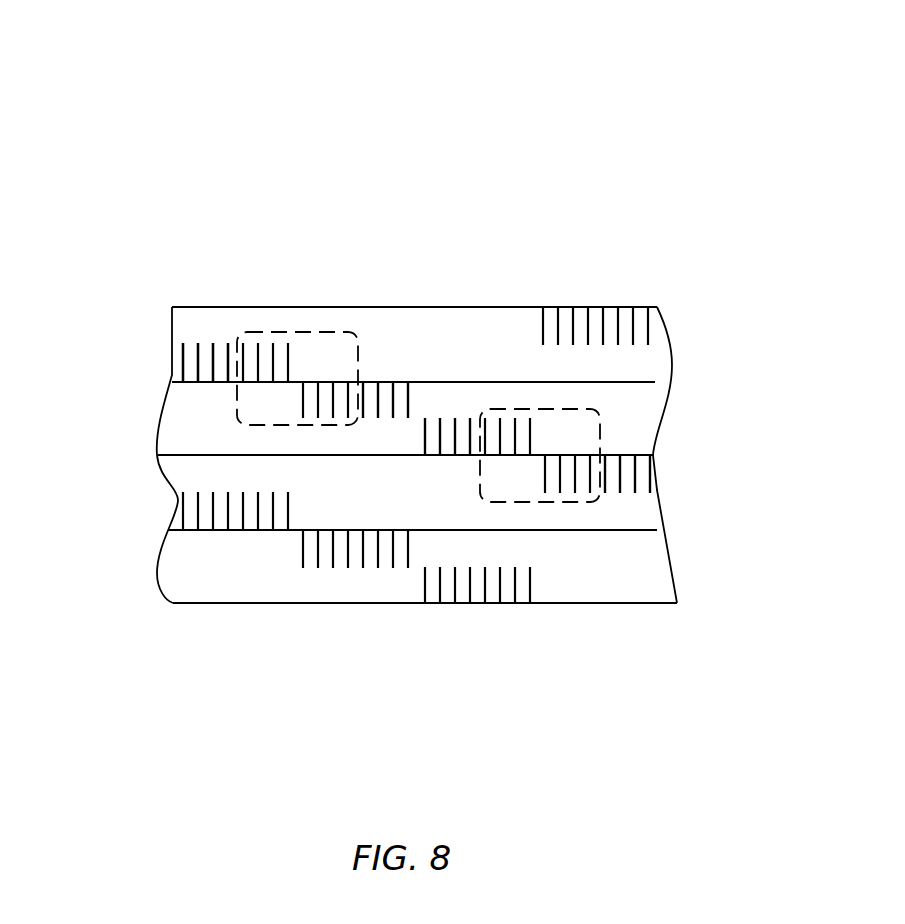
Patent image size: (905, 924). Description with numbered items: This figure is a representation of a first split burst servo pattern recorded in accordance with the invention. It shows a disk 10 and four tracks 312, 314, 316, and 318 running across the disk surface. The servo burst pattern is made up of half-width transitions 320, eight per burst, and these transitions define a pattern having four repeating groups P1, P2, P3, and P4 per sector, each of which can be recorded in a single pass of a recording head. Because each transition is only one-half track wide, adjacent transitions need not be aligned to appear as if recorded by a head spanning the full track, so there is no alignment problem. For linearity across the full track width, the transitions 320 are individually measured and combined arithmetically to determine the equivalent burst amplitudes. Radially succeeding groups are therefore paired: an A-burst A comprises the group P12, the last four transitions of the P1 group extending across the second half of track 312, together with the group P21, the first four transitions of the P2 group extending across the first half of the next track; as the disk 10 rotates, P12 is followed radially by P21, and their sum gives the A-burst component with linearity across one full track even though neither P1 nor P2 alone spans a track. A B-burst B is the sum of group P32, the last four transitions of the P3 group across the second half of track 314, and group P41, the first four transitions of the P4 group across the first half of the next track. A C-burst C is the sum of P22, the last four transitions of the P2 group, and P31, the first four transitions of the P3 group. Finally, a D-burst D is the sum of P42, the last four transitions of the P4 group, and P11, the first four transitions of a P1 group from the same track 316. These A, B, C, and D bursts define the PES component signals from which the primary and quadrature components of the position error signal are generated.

The disk 10 is at (437, 118).
The track 312 is at (717, 343).
The track 314 is at (717, 417).
The track 316 is at (717, 492).
The track 318 is at (717, 573).
The half-width transitions 320 is at (363, 272).
The P1 group P1 is at (170, 488).
The P2 group P2 is at (293, 547).
The P3 group P3 is at (415, 585).
The P4 group P4 is at (657, 327).
The P1₁ group of transitions P11 is at (172, 357).
The P1₂ group of transitions P12 is at (307, 362).
The P2₁ group of transitions P21 is at (290, 400).
The P2₂ group of transitions P22 is at (418, 397).
The P3₁ group of transitions P31 is at (417, 445).
The P3₂ group of transitions P32 is at (533, 438).
The P4₁ group of transitions P41 is at (537, 492).
The P4₂ group of transitions P42 is at (633, 502).
The A-burst A is at (365, 327).
The B-burst B is at (492, 397).
The C-burst C is at (443, 467).
The D-burst D is at (655, 548).